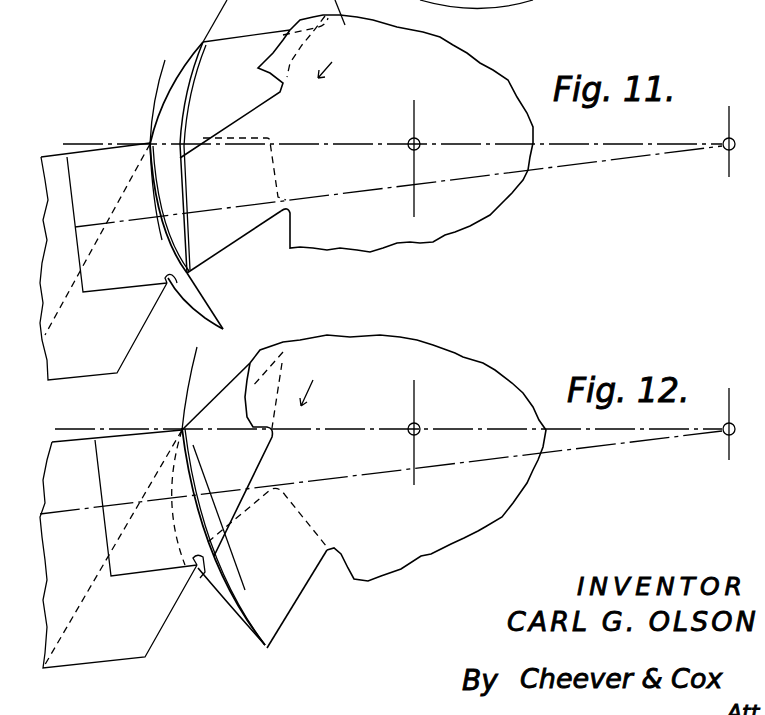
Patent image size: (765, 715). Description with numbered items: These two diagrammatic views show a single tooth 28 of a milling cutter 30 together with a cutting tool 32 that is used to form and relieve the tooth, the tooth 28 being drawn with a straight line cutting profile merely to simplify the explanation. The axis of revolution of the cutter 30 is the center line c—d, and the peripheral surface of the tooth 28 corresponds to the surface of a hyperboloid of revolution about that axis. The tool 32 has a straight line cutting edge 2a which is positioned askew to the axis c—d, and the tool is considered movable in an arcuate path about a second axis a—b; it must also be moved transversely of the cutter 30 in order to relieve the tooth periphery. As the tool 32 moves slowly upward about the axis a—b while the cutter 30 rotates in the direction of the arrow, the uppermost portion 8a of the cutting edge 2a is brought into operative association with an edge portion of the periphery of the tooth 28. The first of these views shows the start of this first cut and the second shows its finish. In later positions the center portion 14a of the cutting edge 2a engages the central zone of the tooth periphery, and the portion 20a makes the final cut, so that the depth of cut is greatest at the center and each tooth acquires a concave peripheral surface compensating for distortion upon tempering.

In FIG. 11, the cutting edge 2a is at (190, 367).
In FIG. 12, the cutting edge 2a is at (206, 554).
In FIG. 11, the uppermost portion of the cutting edge 8a is at (148, 143).
In FIG. 12, the uppermost portion of the cutting edge 8a is at (182, 428).
In FIG. 11, the center portion of the cutting edge 14a is at (157, 215).
In FIG. 12, the center portion of the cutting edge 14a is at (177, 494).
In FIG. 11, the portion of the cutting edge 20a is at (168, 283).
In FIG. 12, the portion of the cutting edge 20a is at (199, 578).
In FIG. 11, the tooth 28 is at (233, 230).
In FIG. 12, the tooth 28 is at (293, 585).
In FIG. 11, the milling cutter 30 is at (508, 58).
In FIG. 12, the milling cutter 30 is at (497, 380).
In FIG. 11, the cutting tool 32 is at (125, 333).
In FIG. 12, the cutting tool 32 is at (128, 647).
In FIG. 11, the axis point a is at (724, 142).
In FIG. 12, the axis point a is at (724, 426).
In FIG. 11, the axis point b is at (734, 138).
In FIG. 12, the axis point b is at (736, 422).
In FIG. 11, the center line point c is at (410, 143).
In FIG. 12, the center line point c is at (408, 426).
In FIG. 11, the center line point d is at (419, 139).
In FIG. 12, the center line point d is at (419, 423).